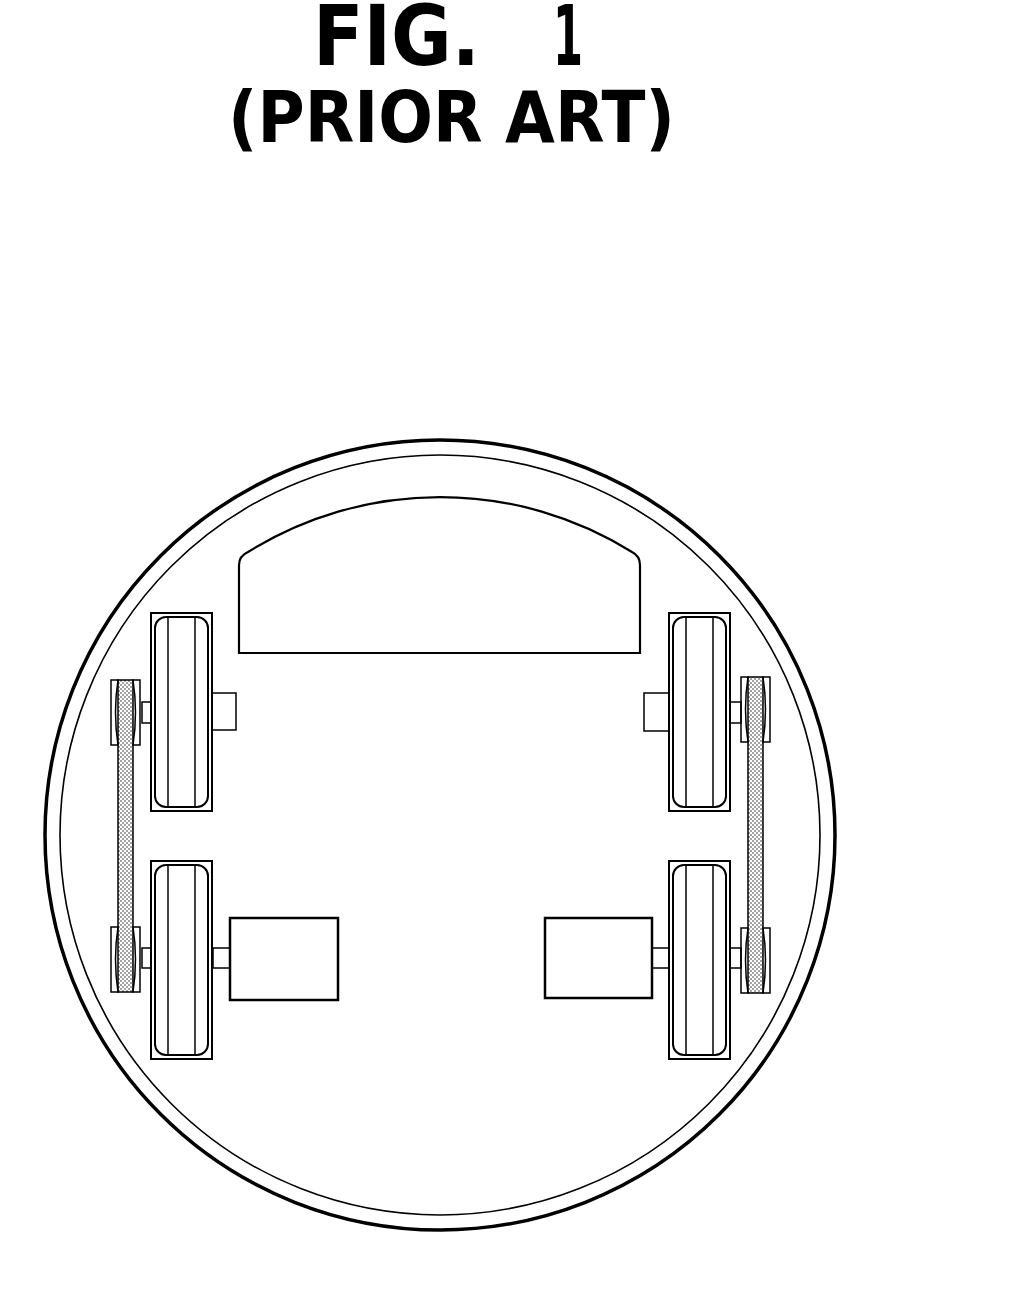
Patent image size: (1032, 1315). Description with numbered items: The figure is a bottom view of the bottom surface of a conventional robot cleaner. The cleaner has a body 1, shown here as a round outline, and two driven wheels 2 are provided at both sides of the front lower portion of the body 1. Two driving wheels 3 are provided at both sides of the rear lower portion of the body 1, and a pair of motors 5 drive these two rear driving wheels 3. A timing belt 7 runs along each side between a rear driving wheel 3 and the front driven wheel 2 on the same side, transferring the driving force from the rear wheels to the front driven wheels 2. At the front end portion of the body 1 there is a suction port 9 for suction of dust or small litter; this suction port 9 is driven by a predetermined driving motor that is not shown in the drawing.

The body 1 is at (393, 432).
The driven wheels 2 is at (699, 630).
The driving wheels 3 is at (715, 1034).
The motors 5 is at (565, 978).
The timing belt 7 is at (760, 834).
The suction port 9 is at (468, 525).